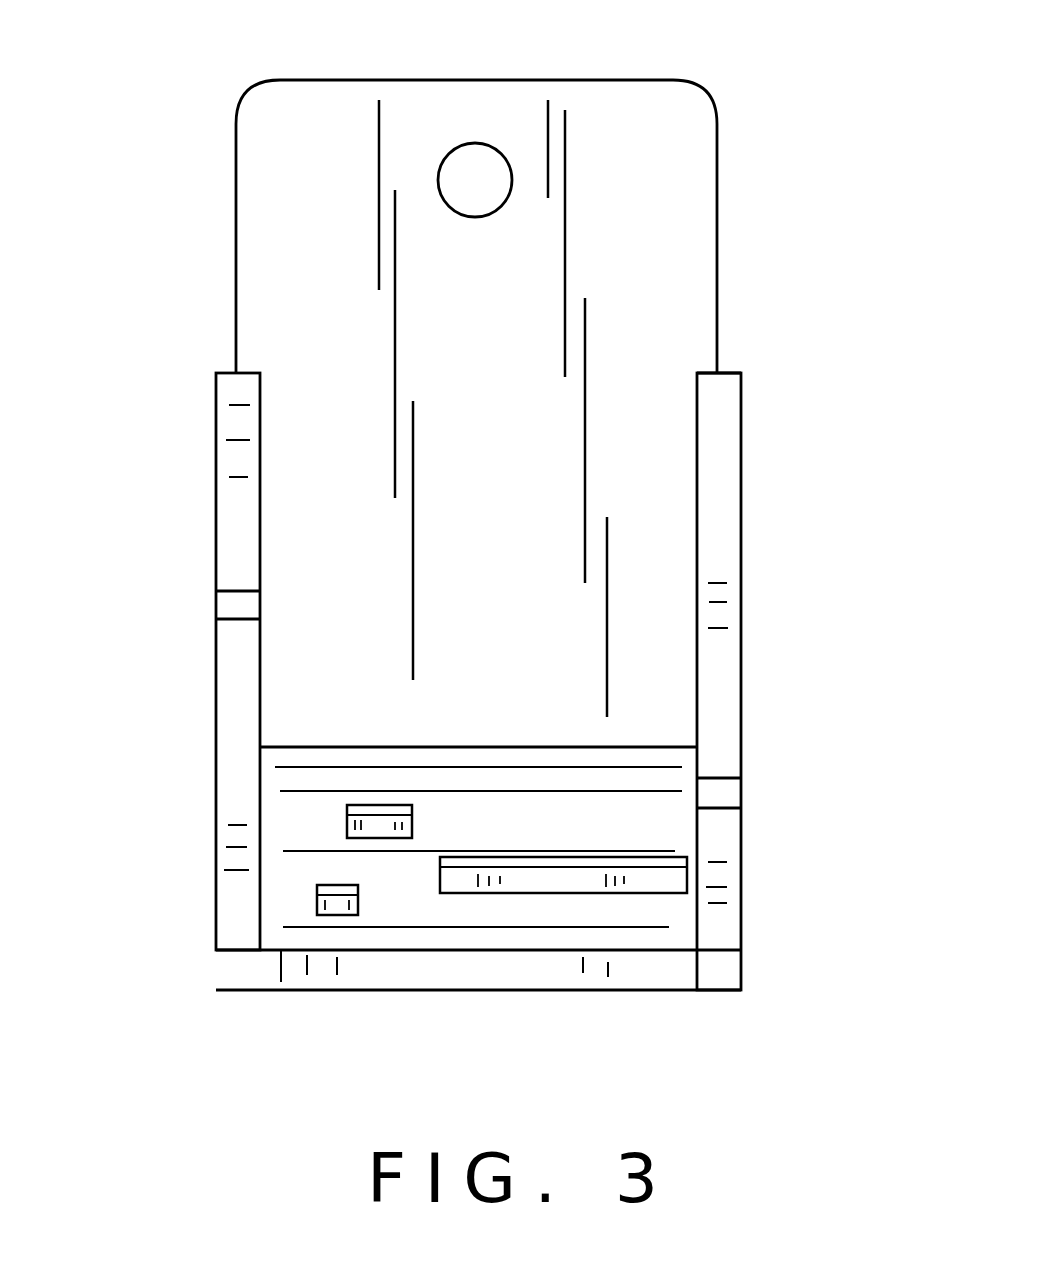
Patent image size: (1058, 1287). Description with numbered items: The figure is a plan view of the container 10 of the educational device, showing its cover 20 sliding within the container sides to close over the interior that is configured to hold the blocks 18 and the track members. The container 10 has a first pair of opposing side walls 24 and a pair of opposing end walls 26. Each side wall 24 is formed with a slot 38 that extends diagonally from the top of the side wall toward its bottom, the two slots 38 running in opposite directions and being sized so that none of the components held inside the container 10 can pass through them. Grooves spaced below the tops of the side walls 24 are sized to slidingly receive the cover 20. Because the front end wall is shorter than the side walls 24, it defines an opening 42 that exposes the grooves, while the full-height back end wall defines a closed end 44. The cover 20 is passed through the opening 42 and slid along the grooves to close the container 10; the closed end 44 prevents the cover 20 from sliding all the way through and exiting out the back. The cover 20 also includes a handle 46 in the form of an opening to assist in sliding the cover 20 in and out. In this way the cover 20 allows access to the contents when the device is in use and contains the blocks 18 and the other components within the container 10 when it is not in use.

The container 10 is at (137, 562).
The cover 20 is at (717, 143).
The handle 46 is at (480, 163).
The side walls 24 is at (216, 737).
The slot 38 is at (228, 605).
The opening 42 is at (723, 373).
The end walls 26 is at (430, 990).
The closed end 44 is at (718, 953).
The blocks 18 is at (538, 843).